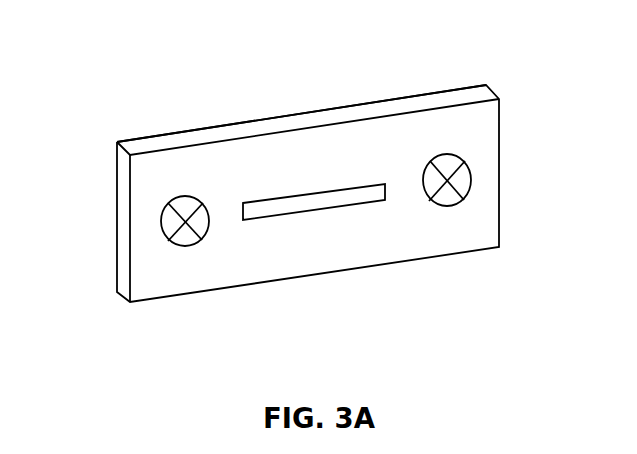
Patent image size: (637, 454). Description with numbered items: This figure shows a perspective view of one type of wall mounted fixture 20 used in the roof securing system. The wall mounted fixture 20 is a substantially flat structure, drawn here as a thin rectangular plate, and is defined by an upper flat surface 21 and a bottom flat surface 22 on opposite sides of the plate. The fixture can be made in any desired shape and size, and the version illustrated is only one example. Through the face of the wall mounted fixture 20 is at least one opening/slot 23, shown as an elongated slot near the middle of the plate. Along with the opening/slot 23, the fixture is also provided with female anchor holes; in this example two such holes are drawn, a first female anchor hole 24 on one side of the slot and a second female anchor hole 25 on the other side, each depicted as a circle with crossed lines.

The wall mounted fixture 20 is at (125, 75).
The upper flat surface 21 is at (500, 173).
The bottom flat surface 22 is at (241, 122).
The opening/slot 23 is at (315, 202).
The female anchor hole 24 is at (185, 246).
The female anchor hole 25 is at (448, 206).